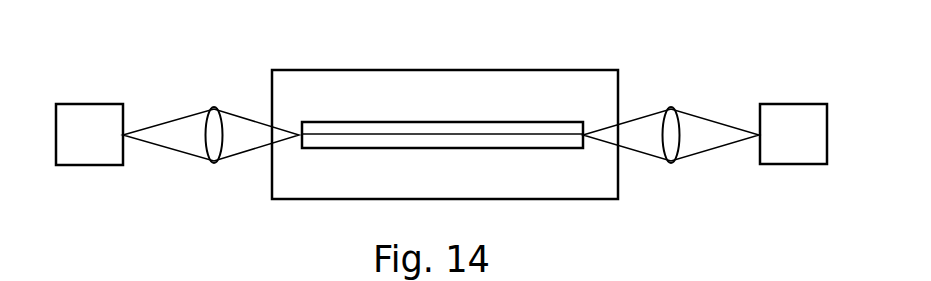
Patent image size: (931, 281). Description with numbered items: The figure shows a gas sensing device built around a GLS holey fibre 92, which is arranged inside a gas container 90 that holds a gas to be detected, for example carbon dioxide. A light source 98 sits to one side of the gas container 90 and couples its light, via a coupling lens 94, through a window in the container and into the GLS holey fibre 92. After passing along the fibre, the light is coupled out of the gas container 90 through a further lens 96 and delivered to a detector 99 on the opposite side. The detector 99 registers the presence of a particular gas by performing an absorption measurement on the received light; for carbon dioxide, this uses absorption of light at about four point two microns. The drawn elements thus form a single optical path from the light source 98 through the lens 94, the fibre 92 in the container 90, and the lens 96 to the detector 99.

The gas container 90 is at (310, 70).
The GLS holey fibre 92 is at (441, 122).
The coupling lens 94 is at (216, 107).
The further lens 96 is at (672, 107).
The light source 98 is at (102, 105).
The detector 99 is at (805, 105).